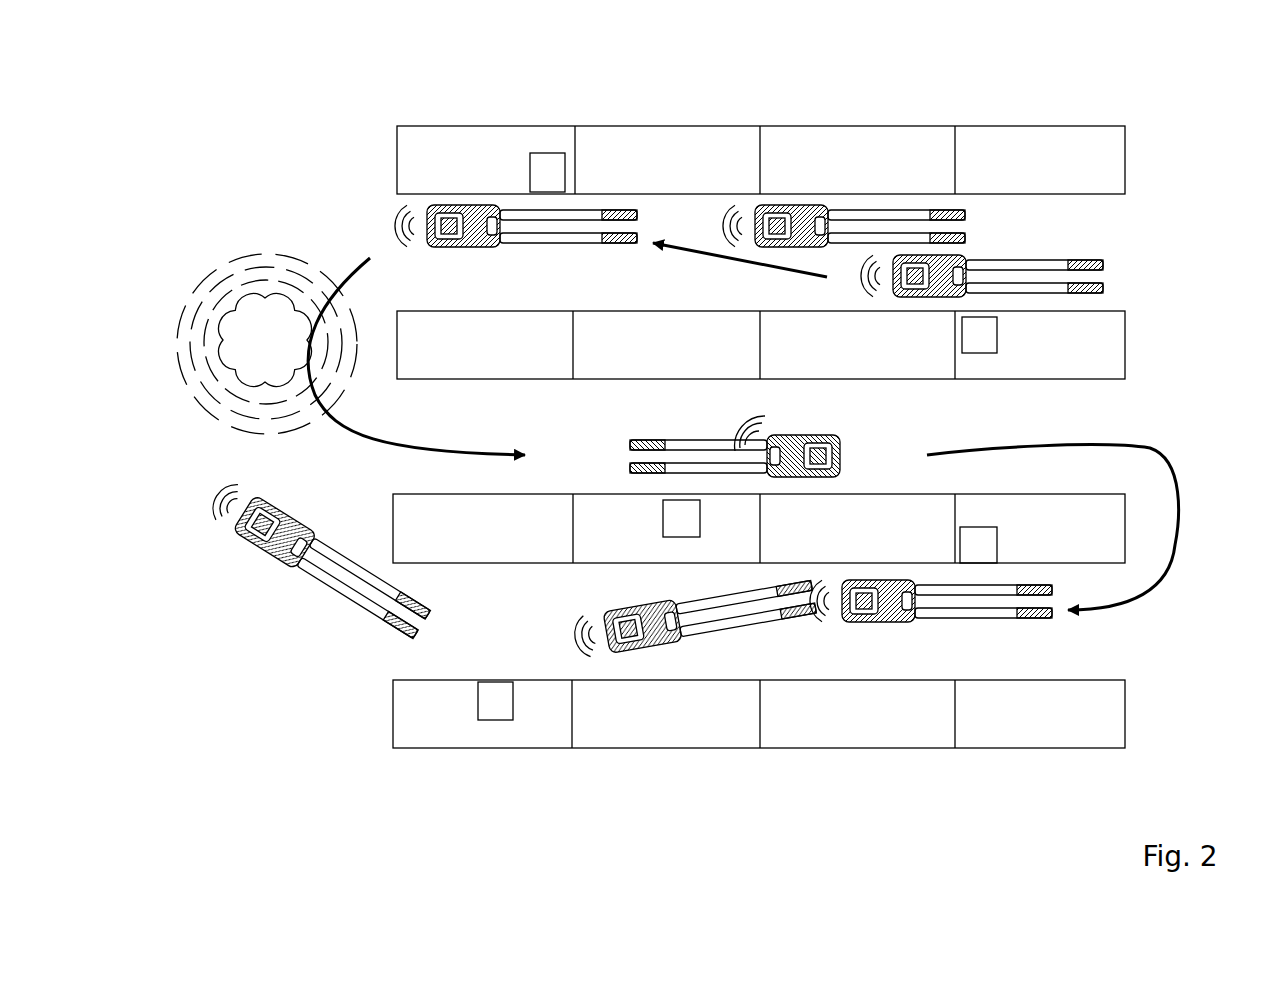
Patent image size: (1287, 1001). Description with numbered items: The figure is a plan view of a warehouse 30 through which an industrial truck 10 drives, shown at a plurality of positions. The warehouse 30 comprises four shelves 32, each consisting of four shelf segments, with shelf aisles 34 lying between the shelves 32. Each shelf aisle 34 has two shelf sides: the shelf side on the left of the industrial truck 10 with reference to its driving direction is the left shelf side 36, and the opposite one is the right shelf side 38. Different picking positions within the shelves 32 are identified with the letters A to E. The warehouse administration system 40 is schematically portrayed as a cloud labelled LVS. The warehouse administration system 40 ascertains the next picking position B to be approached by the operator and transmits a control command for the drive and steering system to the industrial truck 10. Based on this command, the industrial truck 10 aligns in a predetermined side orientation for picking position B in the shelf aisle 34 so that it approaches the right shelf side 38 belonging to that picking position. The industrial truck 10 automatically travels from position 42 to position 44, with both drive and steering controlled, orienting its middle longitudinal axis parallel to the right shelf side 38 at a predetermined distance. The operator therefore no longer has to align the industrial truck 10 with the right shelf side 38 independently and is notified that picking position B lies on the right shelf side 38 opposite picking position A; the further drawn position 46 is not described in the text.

The industrial truck 10 is at (1085, 253).
The warehouse 30 is at (280, 145).
The shelf 32 is at (712, 138).
The shelf aisle 34 is at (1012, 230).
The left shelf side 36 is at (1078, 315).
The right shelf side 38 is at (720, 200).
The warehouse administration system 40 is at (195, 377).
The position 42 is at (1034, 278).
The position 44 is at (844, 226).
The third robot 46 is at (516, 226).